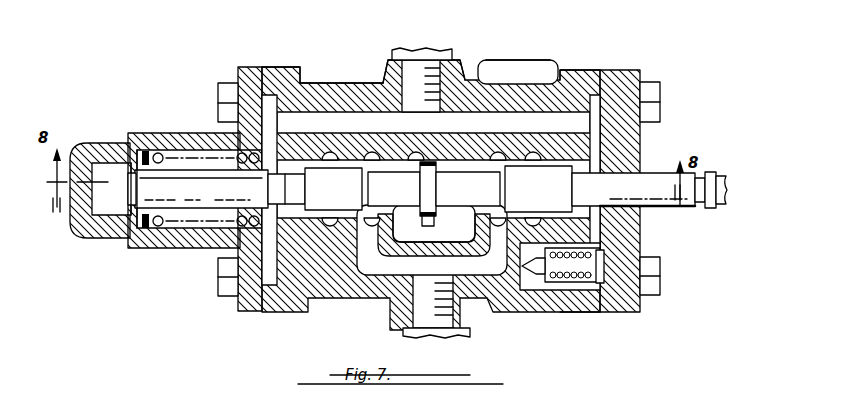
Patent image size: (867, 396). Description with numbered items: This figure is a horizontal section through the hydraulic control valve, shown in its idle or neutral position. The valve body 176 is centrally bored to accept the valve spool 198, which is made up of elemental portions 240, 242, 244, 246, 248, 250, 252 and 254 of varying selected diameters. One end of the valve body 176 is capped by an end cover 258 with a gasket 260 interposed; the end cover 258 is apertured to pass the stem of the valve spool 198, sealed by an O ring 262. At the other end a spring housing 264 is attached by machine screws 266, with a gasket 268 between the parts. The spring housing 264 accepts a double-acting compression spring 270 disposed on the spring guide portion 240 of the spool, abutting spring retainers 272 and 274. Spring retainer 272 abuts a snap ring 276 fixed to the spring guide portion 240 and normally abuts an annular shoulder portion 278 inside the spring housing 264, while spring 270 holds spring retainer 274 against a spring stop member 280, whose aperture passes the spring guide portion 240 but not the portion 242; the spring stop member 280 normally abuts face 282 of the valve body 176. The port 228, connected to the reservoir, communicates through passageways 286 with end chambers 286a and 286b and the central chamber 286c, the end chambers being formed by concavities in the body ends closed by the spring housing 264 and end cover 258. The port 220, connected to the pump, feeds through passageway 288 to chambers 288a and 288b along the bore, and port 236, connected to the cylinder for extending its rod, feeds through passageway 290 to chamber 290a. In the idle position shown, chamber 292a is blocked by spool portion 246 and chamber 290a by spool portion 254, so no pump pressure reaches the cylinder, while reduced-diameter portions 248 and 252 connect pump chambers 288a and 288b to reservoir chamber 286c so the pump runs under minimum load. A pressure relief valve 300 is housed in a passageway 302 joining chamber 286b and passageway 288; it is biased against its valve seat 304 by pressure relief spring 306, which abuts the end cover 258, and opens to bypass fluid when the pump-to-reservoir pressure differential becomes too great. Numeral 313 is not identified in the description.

The valve body 176 is at (351, 97).
The valve spool 198 is at (645, 178).
The port 220 is at (405, 331).
The port 228 is at (418, 52).
The port 236 is at (538, 62).
The spring guide portion 240 is at (188, 192).
The portion 242 is at (270, 182).
The elemental portion 244 is at (300, 200).
The valve spool portion 246 is at (352, 185).
The reduced-diameter portion 248 is at (405, 192).
The elemental portion 250 is at (425, 166).
The reduced-diameter portion 252 is at (482, 192).
The spool portion 254 is at (552, 191).
The end cover 258 is at (627, 242).
The gasket 260 is at (612, 316).
The O ring 262 is at (638, 220).
The spring housing 264 is at (170, 131).
The machine screws 266 is at (230, 85).
The gasket 268 is at (260, 67).
The double-acting compression spring 270 is at (157, 226).
The spring retainer 272 is at (135, 232).
The spring retainer 274 is at (201, 192).
The snap ring 276 is at (128, 224).
The annular shoulder portion 278 is at (120, 142).
The spring stop member 280 is at (245, 248).
The face 282 is at (390, 212).
The passageways 286 is at (431, 195).
The end chamber 286a is at (293, 80).
The end chamber 286b is at (596, 100).
The central chamber 286c is at (426, 240).
The passageway 288 is at (432, 220).
The chamber 288a is at (377, 157).
The chamber 288b is at (500, 147).
The passageway 290 is at (518, 72).
The chamber 290a is at (533, 165).
The chamber 292a is at (345, 130).
The pressure relief valve 300 is at (604, 268).
The passageway 302 is at (538, 242).
The valve seat 304 is at (518, 298).
The pressure relief spring 306 is at (582, 314).
The passage 313 is at (300, 255).